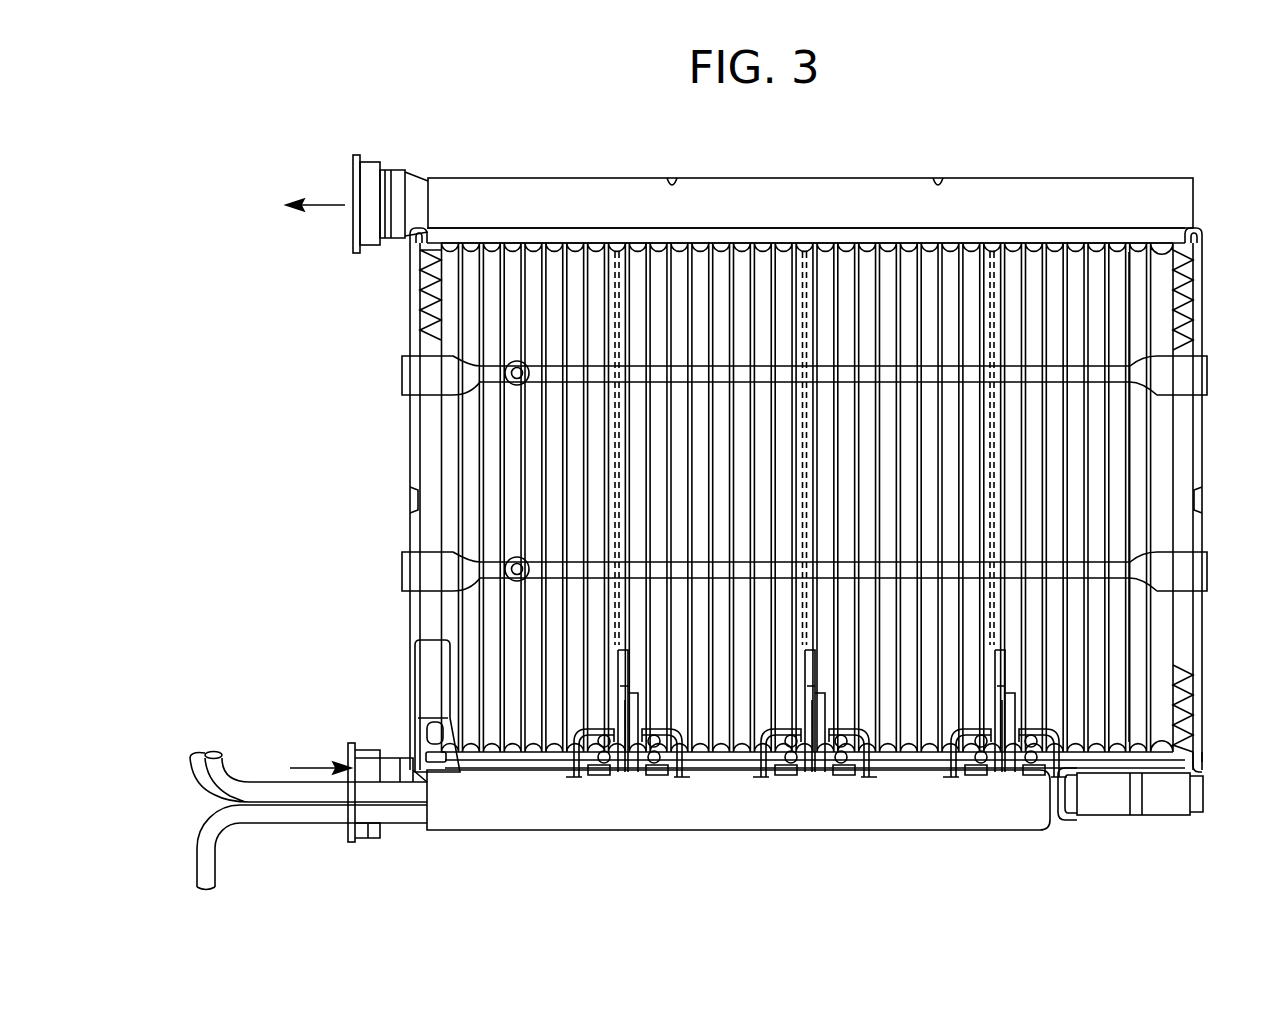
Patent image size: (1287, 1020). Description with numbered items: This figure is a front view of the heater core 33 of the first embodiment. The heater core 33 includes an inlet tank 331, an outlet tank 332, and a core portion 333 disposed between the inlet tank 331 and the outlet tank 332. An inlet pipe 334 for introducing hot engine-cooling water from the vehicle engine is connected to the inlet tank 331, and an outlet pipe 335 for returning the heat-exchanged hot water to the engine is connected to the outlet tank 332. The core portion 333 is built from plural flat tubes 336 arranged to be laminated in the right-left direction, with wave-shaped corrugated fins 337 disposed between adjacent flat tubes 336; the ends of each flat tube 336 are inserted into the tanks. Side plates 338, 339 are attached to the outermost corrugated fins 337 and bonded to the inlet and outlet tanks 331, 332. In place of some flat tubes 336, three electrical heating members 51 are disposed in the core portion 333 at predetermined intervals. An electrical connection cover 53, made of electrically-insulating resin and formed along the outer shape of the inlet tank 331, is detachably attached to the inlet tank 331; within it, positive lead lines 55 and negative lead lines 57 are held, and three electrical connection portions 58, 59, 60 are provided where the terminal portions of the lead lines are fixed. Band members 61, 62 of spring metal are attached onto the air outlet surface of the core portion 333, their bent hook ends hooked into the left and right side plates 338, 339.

The heater core 33 is at (398, 525).
The electrical heating members 51 is at (632, 295).
The electrical connection cover 53 is at (702, 830).
The positive lead lines 55 is at (268, 781).
The negative lead lines 57 is at (297, 823).
The electrical connection portion 58 is at (628, 778).
The electrical connection portion 59 is at (816, 778).
The electrical connection portion 60 is at (1005, 778).
The band member 61 is at (968, 375).
The band member 62 is at (1093, 578).
The inlet tank 331 is at (1160, 798).
The outlet tank 332 is at (741, 195).
The core portion 333 is at (1095, 501).
The inlet pipe 334 is at (366, 755).
The outlet pipe 335 is at (400, 183).
The flat tubes 336 is at (1130, 433).
The corrugated fins 337 is at (1173, 325).
The side plate 338 is at (410, 473).
The side plate 339 is at (1203, 536).